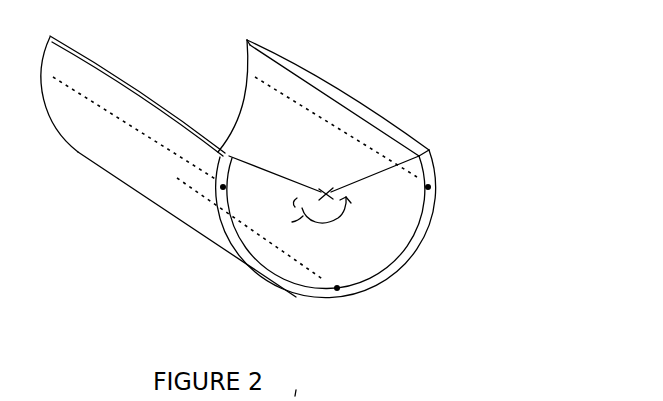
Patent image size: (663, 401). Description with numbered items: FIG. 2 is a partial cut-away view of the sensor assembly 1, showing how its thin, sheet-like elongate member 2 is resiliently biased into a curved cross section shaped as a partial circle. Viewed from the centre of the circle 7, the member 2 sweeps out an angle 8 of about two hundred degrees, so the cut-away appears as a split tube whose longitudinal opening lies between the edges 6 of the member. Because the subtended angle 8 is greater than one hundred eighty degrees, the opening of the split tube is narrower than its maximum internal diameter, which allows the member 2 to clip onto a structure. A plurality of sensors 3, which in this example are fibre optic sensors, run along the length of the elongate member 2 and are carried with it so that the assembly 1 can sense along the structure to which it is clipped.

The sensor assembly 1 is at (578, 216).
The elongate member 2 is at (340, 99).
The sensors 3 is at (428, 187).
The edges 6 is at (87, 41).
The centre of the circle 7 is at (328, 174).
The angle 8 is at (307, 216).